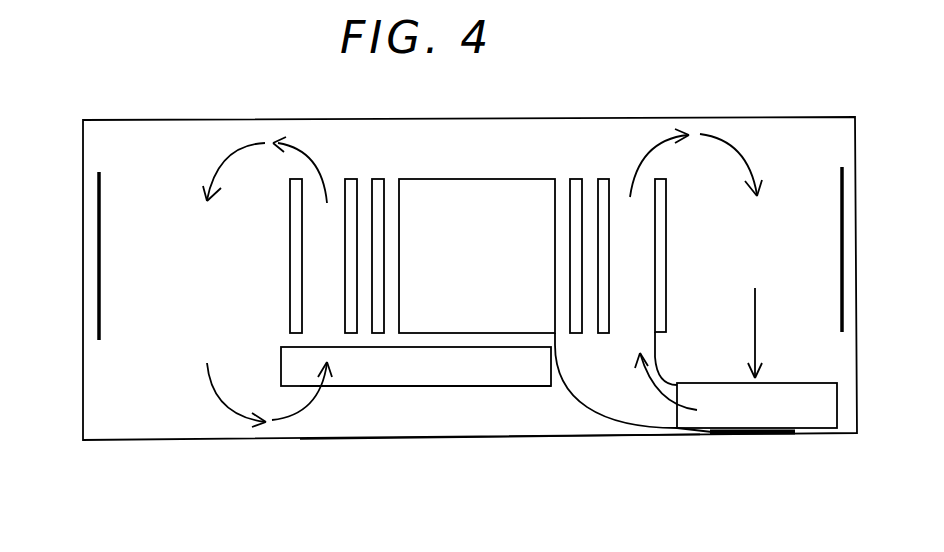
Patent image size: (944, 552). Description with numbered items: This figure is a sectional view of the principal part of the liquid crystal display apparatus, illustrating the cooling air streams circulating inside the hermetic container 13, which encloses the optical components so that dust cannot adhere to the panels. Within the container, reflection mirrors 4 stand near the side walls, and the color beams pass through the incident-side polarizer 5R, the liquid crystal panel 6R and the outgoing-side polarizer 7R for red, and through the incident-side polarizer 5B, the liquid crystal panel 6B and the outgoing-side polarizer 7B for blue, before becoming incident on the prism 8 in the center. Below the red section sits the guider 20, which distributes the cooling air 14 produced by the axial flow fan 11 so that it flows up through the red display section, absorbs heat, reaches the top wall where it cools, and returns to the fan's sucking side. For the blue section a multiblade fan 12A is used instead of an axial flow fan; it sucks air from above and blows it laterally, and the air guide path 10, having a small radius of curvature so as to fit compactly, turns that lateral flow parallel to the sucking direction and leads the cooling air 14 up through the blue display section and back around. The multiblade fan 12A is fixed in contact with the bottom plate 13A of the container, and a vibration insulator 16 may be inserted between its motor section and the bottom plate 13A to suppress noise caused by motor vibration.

The reflection mirror 4 is at (97, 253).
The polarizer on the incident side for red 5R is at (291, 276).
The liquid crystal panel for red 6R is at (351, 179).
The polarizer on the outgoing side for red 7R is at (378, 178).
The prism 8 is at (494, 178).
The polarizer on the outgoing side for blue 7B is at (577, 178).
The liquid crystal panel for blue 6B is at (604, 178).
The polarizer on the incident side for blue 5B is at (660, 271).
The air guide path 10 is at (603, 410).
The axial flow fan 11 is at (445, 387).
The multiblade fan 12A is at (727, 415).
The hermetic container 13 is at (82, 320).
The bottom plate 13A is at (542, 437).
The cooling air 14 is at (260, 138).
The vibration insulator 16 is at (778, 437).
The guider 20 is at (384, 347).